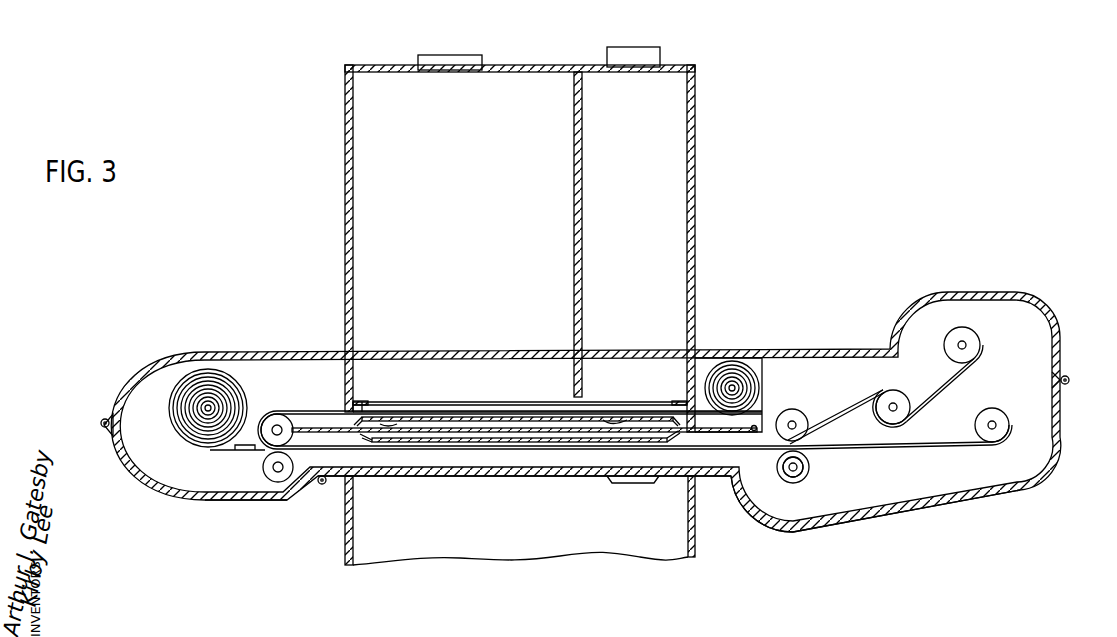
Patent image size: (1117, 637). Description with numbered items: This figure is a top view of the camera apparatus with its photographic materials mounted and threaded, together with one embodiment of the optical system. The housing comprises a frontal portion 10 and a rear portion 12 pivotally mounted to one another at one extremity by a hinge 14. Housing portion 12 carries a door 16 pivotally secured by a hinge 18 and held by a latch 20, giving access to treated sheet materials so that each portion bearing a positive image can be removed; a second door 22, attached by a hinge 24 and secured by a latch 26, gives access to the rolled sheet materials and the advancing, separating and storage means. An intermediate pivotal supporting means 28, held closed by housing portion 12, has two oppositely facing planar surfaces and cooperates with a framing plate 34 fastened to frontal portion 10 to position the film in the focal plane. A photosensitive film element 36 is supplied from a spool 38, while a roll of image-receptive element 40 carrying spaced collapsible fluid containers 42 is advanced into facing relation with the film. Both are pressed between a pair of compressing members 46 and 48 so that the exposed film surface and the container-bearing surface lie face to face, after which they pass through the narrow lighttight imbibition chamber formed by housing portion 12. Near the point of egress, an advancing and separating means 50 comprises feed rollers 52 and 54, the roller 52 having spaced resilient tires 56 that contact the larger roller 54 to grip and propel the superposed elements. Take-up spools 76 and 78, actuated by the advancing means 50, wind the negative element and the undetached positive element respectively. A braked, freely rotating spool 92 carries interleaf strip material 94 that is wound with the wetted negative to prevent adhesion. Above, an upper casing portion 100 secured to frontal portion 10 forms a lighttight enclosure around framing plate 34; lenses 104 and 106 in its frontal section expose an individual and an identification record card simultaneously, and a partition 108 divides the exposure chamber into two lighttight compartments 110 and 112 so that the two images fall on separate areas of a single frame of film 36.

The frontal portion 10 is at (262, 352).
The rear portion 12 is at (255, 500).
The hinge 14 is at (102, 421).
The door 16 is at (418, 476).
The hinge 18 is at (320, 485).
The latch 20 is at (632, 483).
The second door 22 is at (907, 517).
The hinge 24 is at (1069, 385).
The latch 26 is at (748, 518).
The intermediate pivotal supporting means 28 is at (510, 427).
The framing plate 34 is at (392, 402).
The photosensitive film element 36 is at (450, 416).
The spool 38 is at (732, 370).
The image-receptive element 40 is at (245, 398).
The collapsible fluid containers 42 is at (217, 452).
The compressing member 46 is at (262, 467).
The compressing member 48 is at (279, 423).
The advancing and separating means 50 is at (786, 398).
The feed roller 52 is at (803, 471).
The feed roller 54 is at (803, 413).
The tires 56 is at (782, 468).
The take-up spool 76 is at (895, 393).
The take-up spool 78 is at (1007, 433).
The spool 92 is at (980, 343).
The interleaf strip material 94 is at (942, 386).
The upper casing portion 100 is at (345, 206).
The lens 104 is at (642, 47).
The lens 106 is at (447, 55).
The partition 108 is at (573, 180).
The compartment 110 is at (631, 203).
The compartment 112 is at (441, 247).